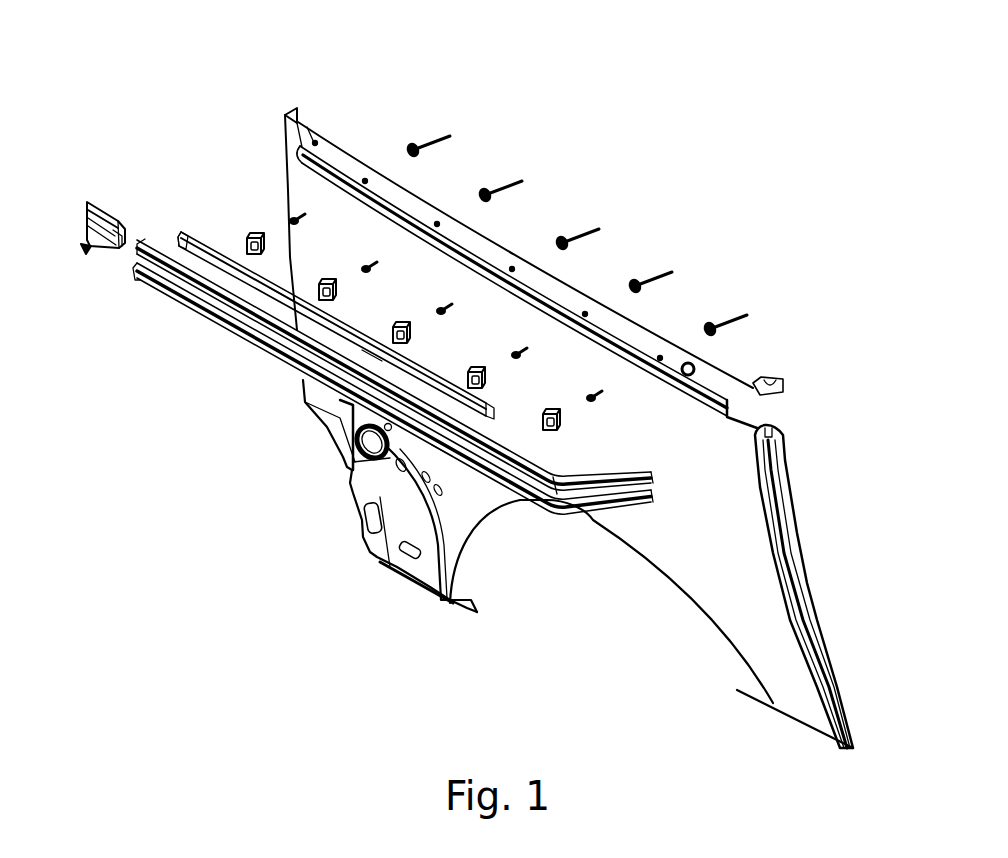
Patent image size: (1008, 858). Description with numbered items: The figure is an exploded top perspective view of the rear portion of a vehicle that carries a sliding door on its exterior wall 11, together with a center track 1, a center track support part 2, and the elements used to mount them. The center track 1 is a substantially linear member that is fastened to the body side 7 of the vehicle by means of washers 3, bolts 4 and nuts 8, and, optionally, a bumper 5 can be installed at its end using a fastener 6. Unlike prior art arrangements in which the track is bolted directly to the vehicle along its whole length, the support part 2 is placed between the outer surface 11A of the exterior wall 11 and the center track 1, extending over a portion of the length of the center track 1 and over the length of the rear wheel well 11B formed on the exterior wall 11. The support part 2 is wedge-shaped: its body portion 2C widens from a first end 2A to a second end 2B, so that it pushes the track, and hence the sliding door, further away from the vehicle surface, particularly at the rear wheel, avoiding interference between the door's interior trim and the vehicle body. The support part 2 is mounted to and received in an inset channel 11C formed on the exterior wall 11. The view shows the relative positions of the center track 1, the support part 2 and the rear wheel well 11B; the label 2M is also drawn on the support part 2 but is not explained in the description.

The center track 1 is at (146, 275).
The support part 2 is at (188, 228).
The first end 2A is at (441, 449).
The second end 2B is at (182, 230).
The body portion 2C is at (282, 298).
The mounting portion of trim rail 2M is at (370, 352).
The washers 3 is at (252, 232).
The bolts 4 is at (306, 218).
The bumper 5 is at (90, 200).
The fastener 6 is at (84, 254).
The body side 7 is at (360, 152).
The nuts 8 is at (413, 150).
The exterior wall 11 is at (724, 583).
The outer surface 11A is at (753, 500).
The rear wheel well 11B is at (497, 550).
The inset channel 11C is at (370, 165).